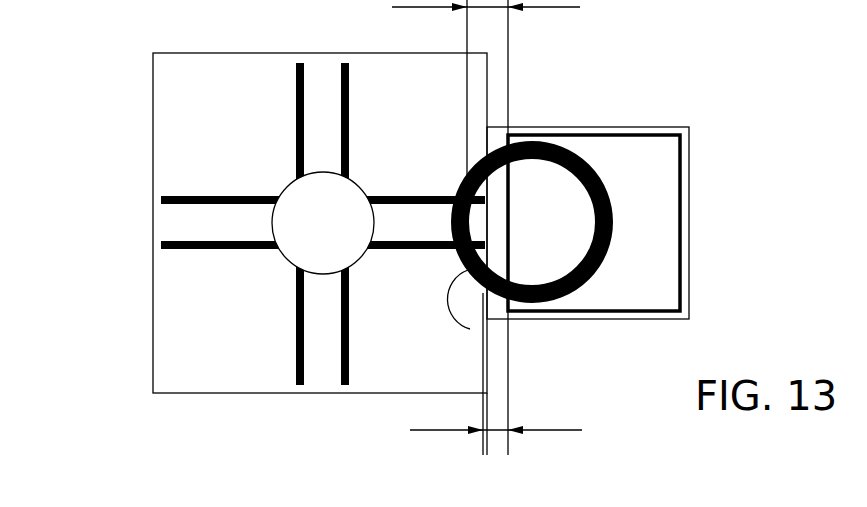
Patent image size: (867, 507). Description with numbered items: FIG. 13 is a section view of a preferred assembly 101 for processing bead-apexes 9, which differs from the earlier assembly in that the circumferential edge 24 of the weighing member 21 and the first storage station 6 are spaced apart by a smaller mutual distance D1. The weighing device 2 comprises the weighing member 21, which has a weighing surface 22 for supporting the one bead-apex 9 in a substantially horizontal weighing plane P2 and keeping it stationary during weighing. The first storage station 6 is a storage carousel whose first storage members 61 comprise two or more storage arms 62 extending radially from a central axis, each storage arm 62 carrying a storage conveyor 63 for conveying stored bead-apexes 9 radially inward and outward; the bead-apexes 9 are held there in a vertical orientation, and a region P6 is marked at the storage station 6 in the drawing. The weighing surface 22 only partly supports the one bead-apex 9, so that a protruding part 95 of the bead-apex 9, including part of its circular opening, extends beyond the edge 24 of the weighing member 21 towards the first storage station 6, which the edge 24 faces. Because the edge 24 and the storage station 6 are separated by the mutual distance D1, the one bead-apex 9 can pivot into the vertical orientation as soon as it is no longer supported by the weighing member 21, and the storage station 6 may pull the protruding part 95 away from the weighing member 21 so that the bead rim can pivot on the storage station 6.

The assembly 101 is at (412, 235).
The first plane region P6 is at (153, 84).
The first storage station 6 is at (285, 223).
The first storage member 61 is at (381, 207).
The storage arm 62 is at (323, 224).
The storage conveyor 63 is at (363, 224).
The weighing device 2 is at (586, 231).
The weighing member 21 is at (668, 167).
The weighing surface 22 is at (660, 228).
The weighing plane P2 is at (691, 313).
The bead-apex 9 is at (558, 138).
The circumferential edge 24 is at (505, 194).
The protruding part 95 is at (470, 329).
The mutual distance D1 is at (487, 234).